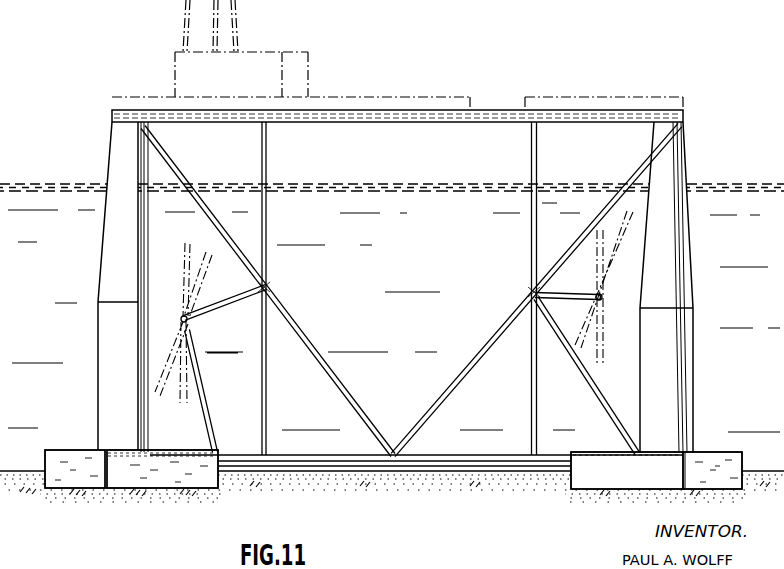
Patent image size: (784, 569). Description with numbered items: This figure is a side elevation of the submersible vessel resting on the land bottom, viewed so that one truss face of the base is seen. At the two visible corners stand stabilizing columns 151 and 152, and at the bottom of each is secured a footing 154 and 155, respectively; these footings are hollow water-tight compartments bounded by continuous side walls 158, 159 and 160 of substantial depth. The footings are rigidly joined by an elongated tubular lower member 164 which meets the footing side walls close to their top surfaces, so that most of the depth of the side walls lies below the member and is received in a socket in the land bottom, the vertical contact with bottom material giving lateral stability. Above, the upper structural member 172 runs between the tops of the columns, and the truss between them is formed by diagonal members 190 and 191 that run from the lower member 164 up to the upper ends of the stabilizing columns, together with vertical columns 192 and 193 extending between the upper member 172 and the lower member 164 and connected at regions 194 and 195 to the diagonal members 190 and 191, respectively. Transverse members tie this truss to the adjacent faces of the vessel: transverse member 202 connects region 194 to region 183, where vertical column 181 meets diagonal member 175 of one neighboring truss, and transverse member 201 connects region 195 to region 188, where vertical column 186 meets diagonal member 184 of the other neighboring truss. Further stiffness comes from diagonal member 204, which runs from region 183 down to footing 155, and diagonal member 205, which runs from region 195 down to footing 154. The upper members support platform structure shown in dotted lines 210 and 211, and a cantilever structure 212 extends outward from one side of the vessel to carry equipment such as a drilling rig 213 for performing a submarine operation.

The stabilizing column 151 is at (694, 262).
The stabilizing column 152 is at (100, 230).
The footing 154 is at (716, 448).
The footing 155 is at (78, 425).
The side wall 158 is at (197, 473).
The side wall 159 is at (603, 477).
The side wall 160 is at (62, 468).
The elongated member 164 is at (466, 455).
The upper structural member 172 is at (447, 121).
The diagonal member 175 is at (208, 276).
The vertical column 181 is at (183, 402).
The region 183 is at (192, 326).
The diagonal member 184 is at (620, 247).
The vertical column 186 is at (603, 361).
The region 188 is at (604, 293).
The diagonal member 190 is at (300, 337).
The diagonal member 191 is at (466, 366).
The vertical column 192 is at (268, 231).
The vertical column 193 is at (529, 237).
The region 194 is at (272, 287).
The region 195 is at (528, 291).
The transverse member 201 is at (570, 293).
The transverse member 202 is at (222, 300).
The diagonal member 204 is at (206, 422).
The diagonal member 205 is at (582, 381).
The platform structure 210 is at (378, 97).
The platform structure 211 is at (633, 97).
The cantilever structure 212 is at (180, 67).
The drilling rig 213 is at (183, 21).